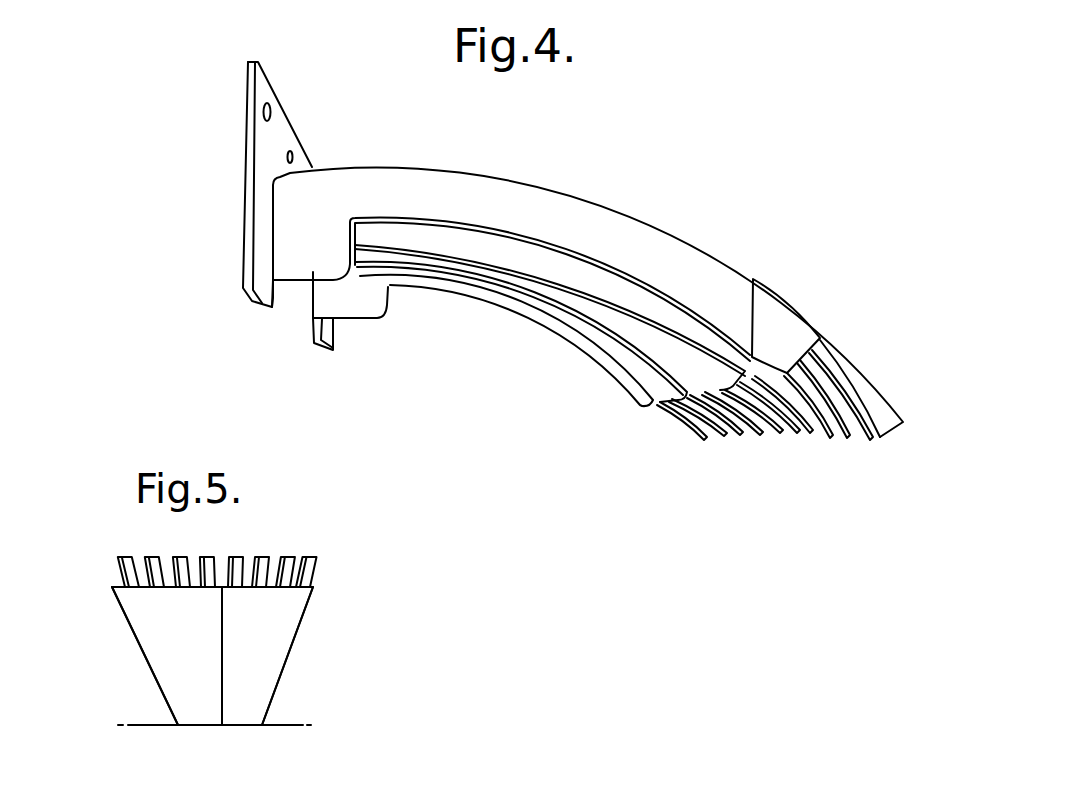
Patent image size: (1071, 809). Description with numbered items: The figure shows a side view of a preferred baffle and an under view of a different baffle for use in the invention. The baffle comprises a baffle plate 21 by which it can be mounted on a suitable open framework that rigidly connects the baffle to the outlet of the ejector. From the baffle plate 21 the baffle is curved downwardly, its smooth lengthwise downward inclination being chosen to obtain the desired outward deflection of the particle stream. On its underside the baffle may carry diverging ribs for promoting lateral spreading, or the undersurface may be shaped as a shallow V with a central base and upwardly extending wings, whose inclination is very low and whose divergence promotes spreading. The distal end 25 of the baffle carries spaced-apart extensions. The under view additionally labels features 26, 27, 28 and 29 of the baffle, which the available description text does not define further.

In FIG. 4, the baffle plate 21 is at (270, 110).
In FIG. 5, the baffle plate 21 is at (280, 725).
In FIG. 5, the distal end 25 is at (313, 587).
In FIG. 4, the bristles 26 is at (888, 424).
In FIG. 5, the bristles 26 is at (282, 557).
In FIG. 5, the central layer 27 is at (222, 653).
In FIG. 5, the right layer 28 is at (288, 623).
In FIG. 5, the left layer 29 is at (145, 618).